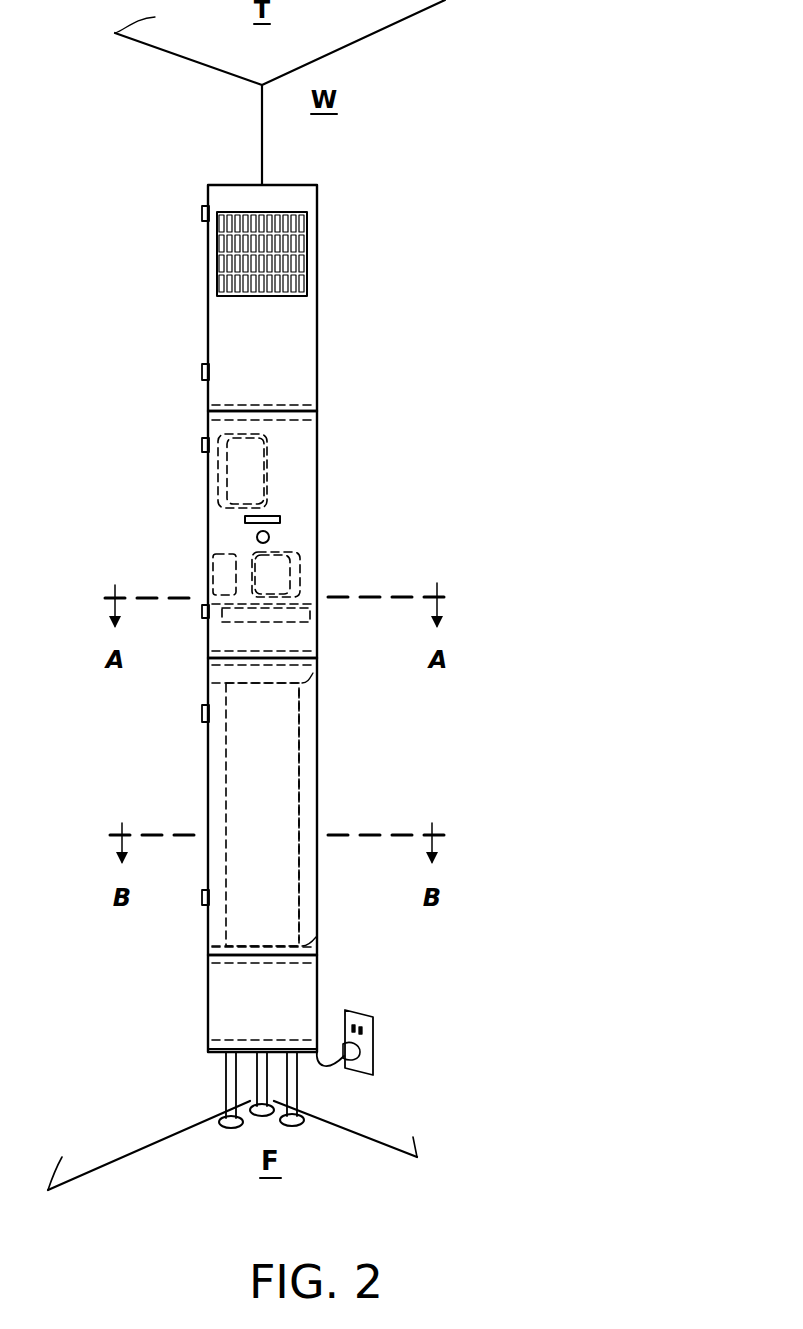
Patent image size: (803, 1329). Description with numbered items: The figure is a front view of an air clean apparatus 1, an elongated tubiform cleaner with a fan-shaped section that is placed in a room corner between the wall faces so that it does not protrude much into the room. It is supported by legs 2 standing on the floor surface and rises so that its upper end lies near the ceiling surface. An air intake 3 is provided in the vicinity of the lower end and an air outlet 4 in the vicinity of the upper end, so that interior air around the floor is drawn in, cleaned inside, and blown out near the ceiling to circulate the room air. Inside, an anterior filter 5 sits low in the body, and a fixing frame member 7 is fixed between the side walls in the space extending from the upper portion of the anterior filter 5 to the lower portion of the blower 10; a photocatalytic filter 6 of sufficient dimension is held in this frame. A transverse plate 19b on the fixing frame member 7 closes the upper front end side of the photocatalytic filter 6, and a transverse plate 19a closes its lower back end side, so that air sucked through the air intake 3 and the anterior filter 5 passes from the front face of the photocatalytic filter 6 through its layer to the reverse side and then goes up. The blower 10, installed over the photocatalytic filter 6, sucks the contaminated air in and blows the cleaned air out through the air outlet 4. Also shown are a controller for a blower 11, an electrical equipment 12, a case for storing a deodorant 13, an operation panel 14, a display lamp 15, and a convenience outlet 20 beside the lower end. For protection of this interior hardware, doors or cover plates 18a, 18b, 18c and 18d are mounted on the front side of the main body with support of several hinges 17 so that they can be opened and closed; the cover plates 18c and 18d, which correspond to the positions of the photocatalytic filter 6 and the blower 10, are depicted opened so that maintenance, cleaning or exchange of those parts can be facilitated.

The air clean apparatus 1 is at (345, 180).
The legs 2 is at (298, 1100).
The air intake 3 is at (215, 1055).
The air outlet 4 is at (290, 257).
The anterior filter 5 is at (215, 1032).
The photocatalytic filter 6 is at (267, 790).
The fixing frame member 7 is at (303, 730).
The blower 10 is at (307, 612).
The controller for a blower 11 is at (280, 572).
The electrical equipment 12 is at (216, 576).
The case for storing a deodorant 13 is at (240, 478).
The operation panel 14 is at (245, 520).
The display lamp 15 is at (270, 537).
The hinges 17 is at (203, 213).
The cover plate 18a is at (298, 365).
The cover plate 18b is at (298, 448).
The cover plate 18c is at (310, 878).
The cover plate 18d is at (218, 995).
The transverse plate 19a is at (316, 937).
The transverse plate 19b is at (313, 673).
The convenience outlet 20 is at (368, 1055).